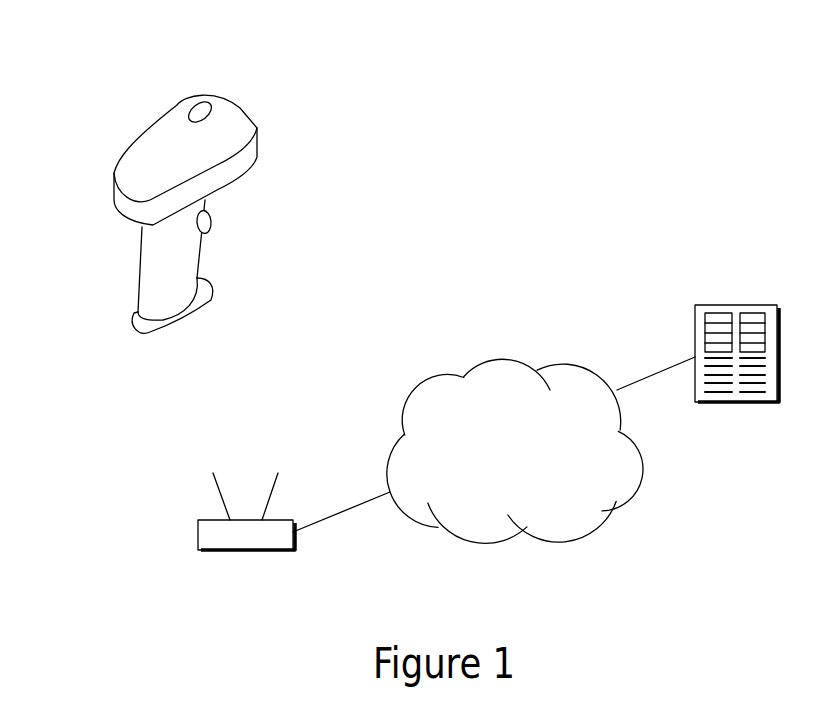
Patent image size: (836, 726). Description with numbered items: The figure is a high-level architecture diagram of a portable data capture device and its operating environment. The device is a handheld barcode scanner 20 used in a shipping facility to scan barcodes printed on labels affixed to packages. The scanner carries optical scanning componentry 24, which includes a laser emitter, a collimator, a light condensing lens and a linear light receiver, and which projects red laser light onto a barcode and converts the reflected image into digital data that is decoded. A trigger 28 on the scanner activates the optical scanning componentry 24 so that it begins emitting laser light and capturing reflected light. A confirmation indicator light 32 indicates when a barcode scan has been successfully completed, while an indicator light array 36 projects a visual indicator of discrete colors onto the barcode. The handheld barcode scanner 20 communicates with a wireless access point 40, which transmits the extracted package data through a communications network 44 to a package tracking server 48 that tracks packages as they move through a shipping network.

The handheld barcode scanner 20 is at (88, 153).
The optical scanning componentry 24 is at (239, 77).
The indicator light array 36 is at (265, 93).
The confirmation indicator light 32 is at (201, 106).
The trigger 28 is at (212, 222).
The wireless access point 40 is at (198, 535).
The communications network 44 is at (582, 525).
The package tracking server 48 is at (733, 303).